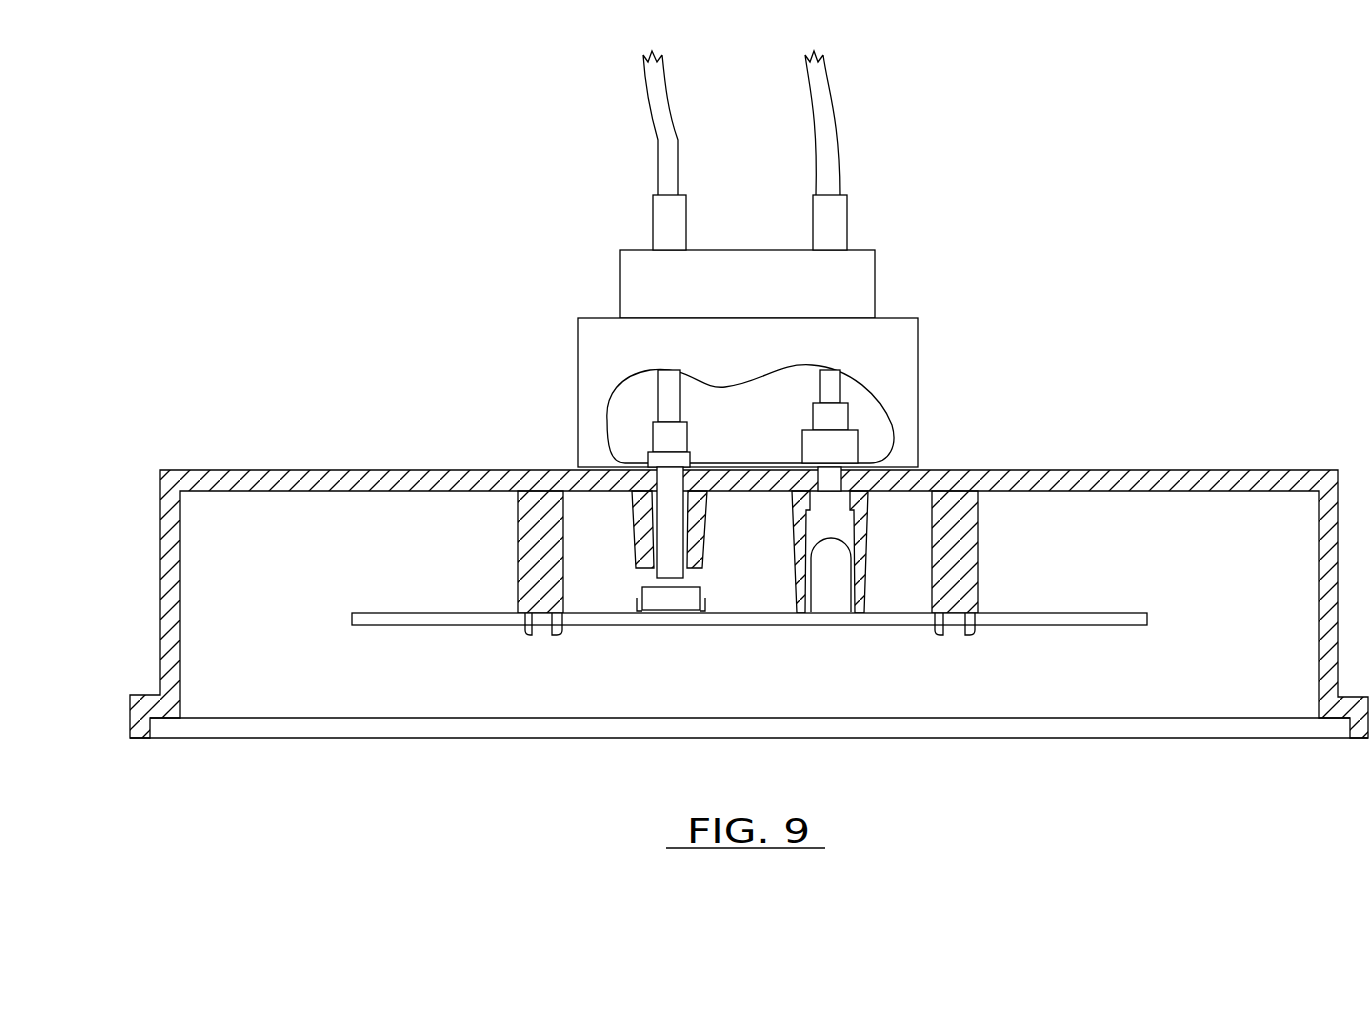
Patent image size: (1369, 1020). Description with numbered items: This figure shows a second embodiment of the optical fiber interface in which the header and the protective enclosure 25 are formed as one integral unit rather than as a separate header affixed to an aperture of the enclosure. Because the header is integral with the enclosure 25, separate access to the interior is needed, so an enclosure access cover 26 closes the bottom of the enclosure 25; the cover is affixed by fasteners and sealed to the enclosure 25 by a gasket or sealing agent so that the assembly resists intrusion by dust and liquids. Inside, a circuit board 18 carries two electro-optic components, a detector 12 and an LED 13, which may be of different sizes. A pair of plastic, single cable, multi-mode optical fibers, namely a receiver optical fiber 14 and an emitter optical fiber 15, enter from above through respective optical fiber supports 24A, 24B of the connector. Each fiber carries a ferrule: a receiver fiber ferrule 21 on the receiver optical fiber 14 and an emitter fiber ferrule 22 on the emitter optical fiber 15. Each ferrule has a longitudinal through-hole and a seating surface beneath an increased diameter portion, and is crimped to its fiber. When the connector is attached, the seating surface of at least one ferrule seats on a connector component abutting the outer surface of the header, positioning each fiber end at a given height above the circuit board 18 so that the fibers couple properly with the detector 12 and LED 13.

The detector 12 is at (637, 592).
The LED 13 is at (846, 537).
The receiver optical fiber 14 is at (647, 102).
The emitter optical fiber 15 is at (838, 120).
The circuit board 18 is at (747, 626).
The receiver fiber ferrule 21 is at (653, 502).
The emitter fiber ferrule 22 is at (860, 440).
The optical fiber support 24A is at (652, 215).
The optical fiber support 24B is at (848, 218).
The enclosure 25 is at (1133, 468).
The enclosure access cover 26 is at (993, 739).